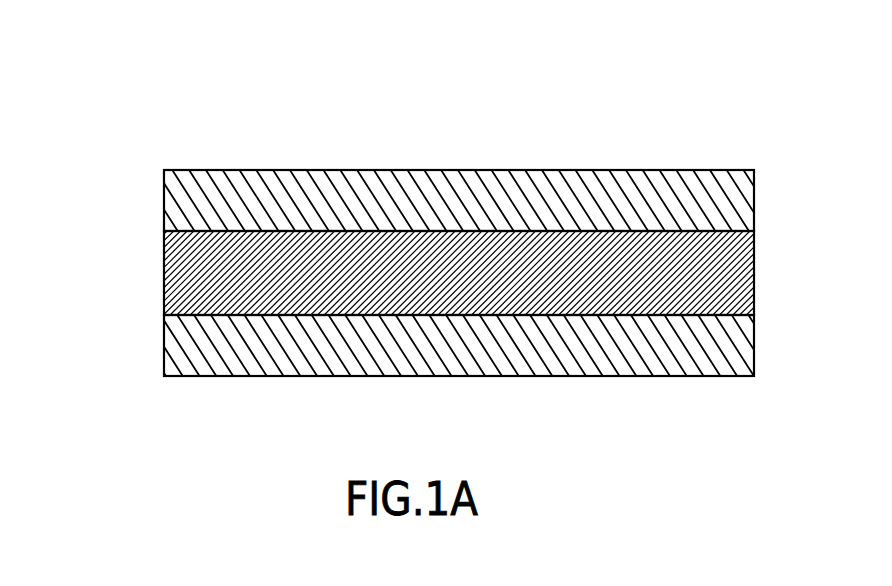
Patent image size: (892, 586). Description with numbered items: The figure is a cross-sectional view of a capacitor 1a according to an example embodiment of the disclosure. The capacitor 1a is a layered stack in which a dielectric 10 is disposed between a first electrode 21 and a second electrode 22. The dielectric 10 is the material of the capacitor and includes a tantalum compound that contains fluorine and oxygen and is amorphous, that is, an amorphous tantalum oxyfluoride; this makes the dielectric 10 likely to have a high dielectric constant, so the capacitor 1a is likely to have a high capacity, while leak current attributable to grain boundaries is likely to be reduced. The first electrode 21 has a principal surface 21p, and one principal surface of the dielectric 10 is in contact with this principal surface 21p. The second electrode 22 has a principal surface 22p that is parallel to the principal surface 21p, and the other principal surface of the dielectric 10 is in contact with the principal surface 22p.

The capacitor 1a is at (726, 97).
The second electrode 22 is at (176, 204).
The dielectric 10 is at (177, 265).
The first electrode 21 is at (176, 343).
The principal surface 22p is at (349, 232).
The principal surface 21p is at (325, 316).